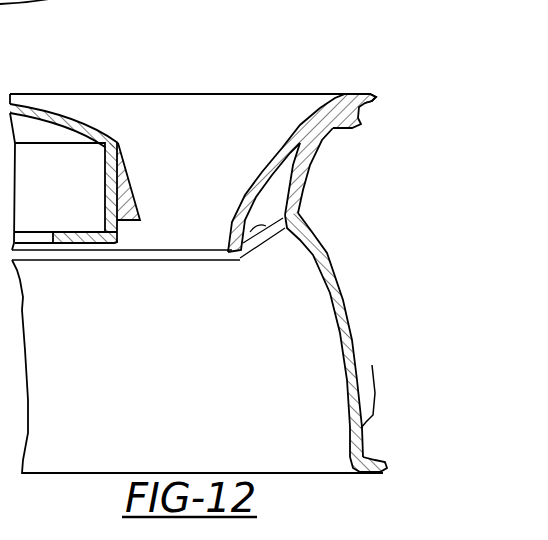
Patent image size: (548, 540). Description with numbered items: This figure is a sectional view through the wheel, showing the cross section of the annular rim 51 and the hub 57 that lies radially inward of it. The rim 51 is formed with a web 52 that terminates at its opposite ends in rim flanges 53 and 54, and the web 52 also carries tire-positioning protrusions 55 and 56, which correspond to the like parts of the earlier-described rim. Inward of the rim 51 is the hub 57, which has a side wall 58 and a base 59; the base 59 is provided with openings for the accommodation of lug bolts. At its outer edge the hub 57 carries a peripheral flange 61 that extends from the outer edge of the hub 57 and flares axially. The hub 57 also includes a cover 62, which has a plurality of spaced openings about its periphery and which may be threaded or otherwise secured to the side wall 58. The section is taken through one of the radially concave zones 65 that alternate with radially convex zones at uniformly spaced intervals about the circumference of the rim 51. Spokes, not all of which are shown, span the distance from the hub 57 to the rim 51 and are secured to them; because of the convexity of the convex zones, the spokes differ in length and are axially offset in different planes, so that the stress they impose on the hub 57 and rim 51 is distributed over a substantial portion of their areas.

The annular rim 51 is at (318, 93).
The web 52 is at (343, 297).
The rim flange 53 is at (376, 98).
The rim flange 54 is at (380, 468).
The tire-positioning protrusion 55 is at (358, 130).
The tire-positioning protrusion 56 is at (372, 365).
The hub 57 is at (150, 137).
The side wall 58 is at (100, 211).
The base 59 is at (82, 245).
The peripheral flange 61 is at (140, 204).
The cover 62 is at (80, 108).
The concave zone 65 is at (243, 260).